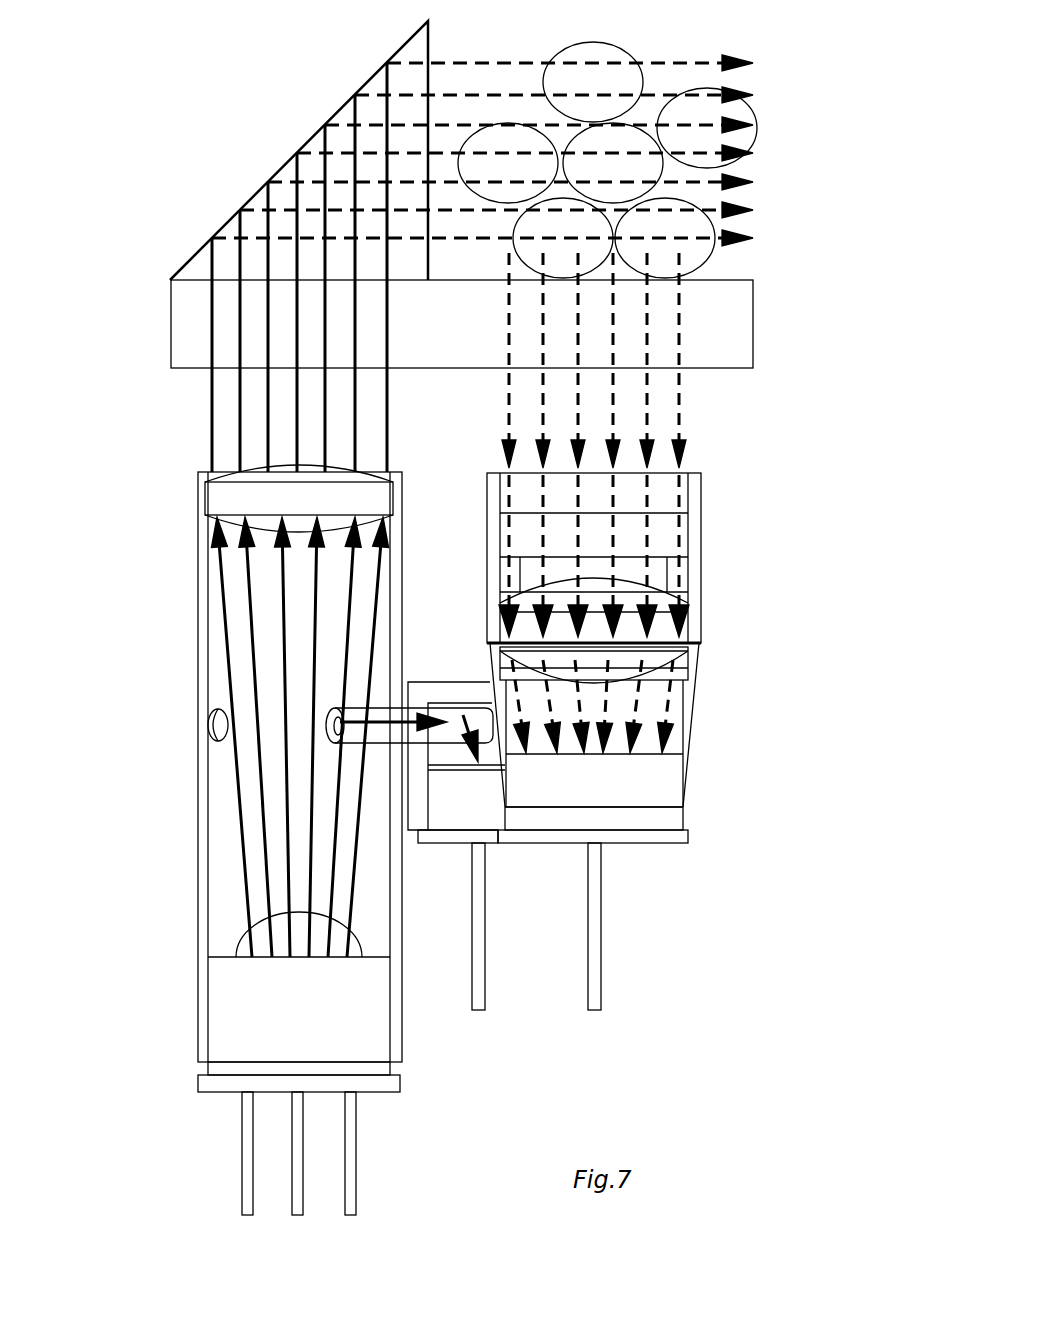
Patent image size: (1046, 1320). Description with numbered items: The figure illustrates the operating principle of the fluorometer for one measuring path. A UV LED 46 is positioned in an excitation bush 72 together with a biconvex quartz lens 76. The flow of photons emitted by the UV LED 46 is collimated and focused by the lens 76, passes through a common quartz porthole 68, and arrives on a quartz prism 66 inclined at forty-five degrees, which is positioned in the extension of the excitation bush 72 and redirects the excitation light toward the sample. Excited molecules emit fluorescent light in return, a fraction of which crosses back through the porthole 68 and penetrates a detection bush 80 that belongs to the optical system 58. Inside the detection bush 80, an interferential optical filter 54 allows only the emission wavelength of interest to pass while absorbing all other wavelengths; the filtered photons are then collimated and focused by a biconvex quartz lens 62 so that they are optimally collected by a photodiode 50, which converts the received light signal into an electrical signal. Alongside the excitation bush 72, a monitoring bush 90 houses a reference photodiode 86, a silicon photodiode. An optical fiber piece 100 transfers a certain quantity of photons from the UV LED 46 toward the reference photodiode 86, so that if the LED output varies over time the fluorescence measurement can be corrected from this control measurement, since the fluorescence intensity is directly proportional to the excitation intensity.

The UV LED 46 is at (230, 1018).
The photodiode 50 is at (658, 780).
The interferential optical filter 54 is at (660, 483).
The optical system 58 is at (755, 327).
The biconvex quartz lens 62 is at (662, 600).
The quartz prism 66 is at (308, 142).
The quartz porthole 68 is at (182, 313).
The excitation bush 72 is at (198, 790).
The biconvex quartz lens 76 is at (215, 498).
The detection bush 80 is at (695, 698).
The reference photodiode 86 is at (458, 798).
The monitoring bush 90 is at (450, 682).
The optical fiber piece 100 is at (390, 713).